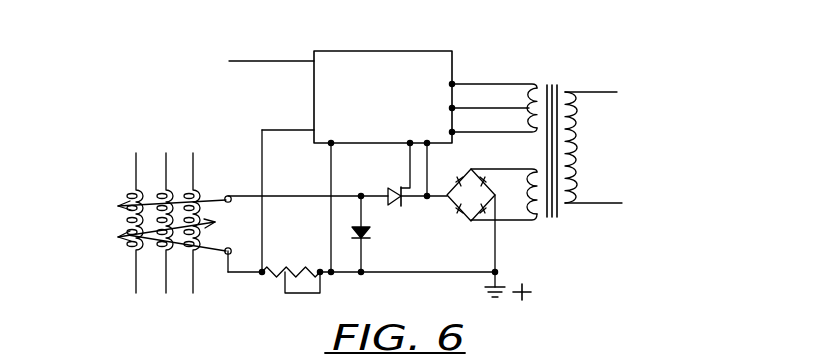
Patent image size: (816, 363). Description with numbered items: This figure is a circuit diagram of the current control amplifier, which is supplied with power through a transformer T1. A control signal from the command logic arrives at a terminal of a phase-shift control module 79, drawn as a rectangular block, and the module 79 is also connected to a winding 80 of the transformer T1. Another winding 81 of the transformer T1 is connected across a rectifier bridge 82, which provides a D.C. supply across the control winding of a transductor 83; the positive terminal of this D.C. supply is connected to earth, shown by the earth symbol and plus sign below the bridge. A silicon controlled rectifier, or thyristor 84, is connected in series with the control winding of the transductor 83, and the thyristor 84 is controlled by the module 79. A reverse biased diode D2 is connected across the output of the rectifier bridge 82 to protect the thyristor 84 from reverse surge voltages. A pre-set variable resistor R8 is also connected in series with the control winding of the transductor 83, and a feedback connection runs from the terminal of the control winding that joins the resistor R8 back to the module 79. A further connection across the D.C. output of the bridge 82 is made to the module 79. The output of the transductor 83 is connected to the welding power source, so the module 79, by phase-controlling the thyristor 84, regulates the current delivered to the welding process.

The phase-shift control module 79 is at (382, 57).
The winding 80 is at (536, 82).
The winding 81 is at (535, 218).
The rectifier bridge 82 is at (468, 218).
The transductor 83 is at (174, 209).
The thyristor 84 is at (396, 191).
The reverse biased diode D2 is at (382, 232).
The pre-set variable resistor R8 is at (290, 265).
The transformer T1 is at (614, 137).